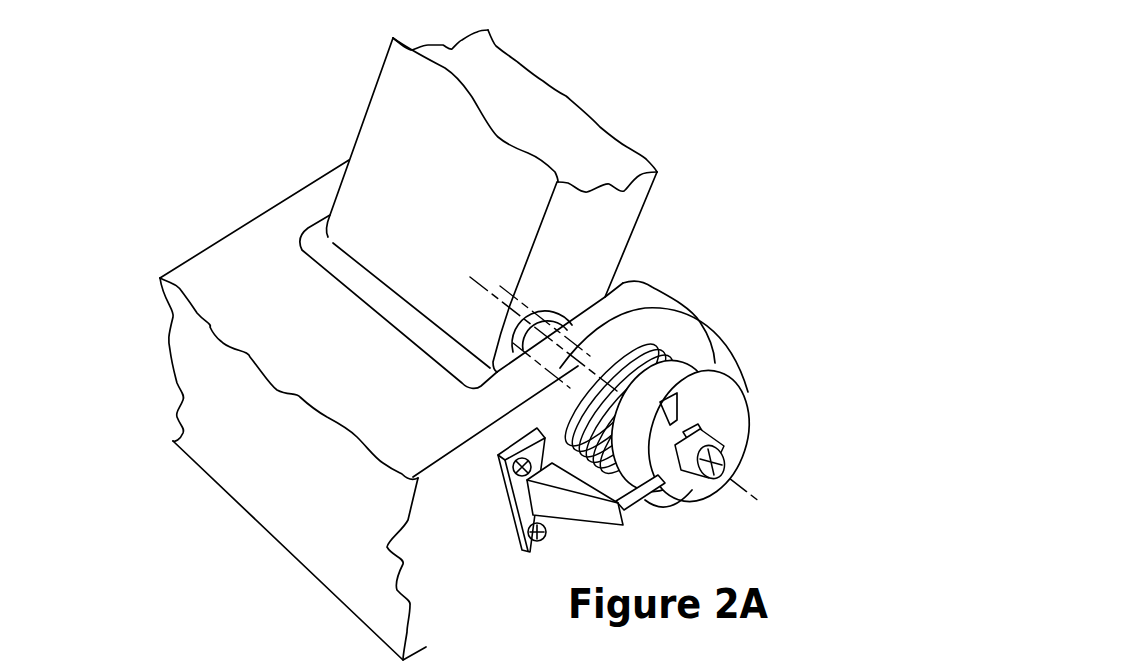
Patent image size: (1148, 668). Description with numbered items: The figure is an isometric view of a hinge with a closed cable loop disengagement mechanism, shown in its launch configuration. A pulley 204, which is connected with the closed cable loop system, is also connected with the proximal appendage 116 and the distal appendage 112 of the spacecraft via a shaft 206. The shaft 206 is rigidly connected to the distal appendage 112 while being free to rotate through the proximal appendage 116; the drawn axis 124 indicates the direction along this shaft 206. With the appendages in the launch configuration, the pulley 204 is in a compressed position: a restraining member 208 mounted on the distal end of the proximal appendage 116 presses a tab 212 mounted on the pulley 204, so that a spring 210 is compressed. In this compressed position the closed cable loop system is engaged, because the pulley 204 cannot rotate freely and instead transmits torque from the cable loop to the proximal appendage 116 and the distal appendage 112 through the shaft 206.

The distal appendage 112 is at (637, 194).
The proximal appendage 116 is at (283, 333).
The pivot axis 124 is at (832, 558).
The pulley 204 is at (713, 393).
The shaft 206 is at (724, 442).
The restraining member 208 is at (577, 512).
The spring 210 is at (665, 365).
The tab 212 is at (688, 512).